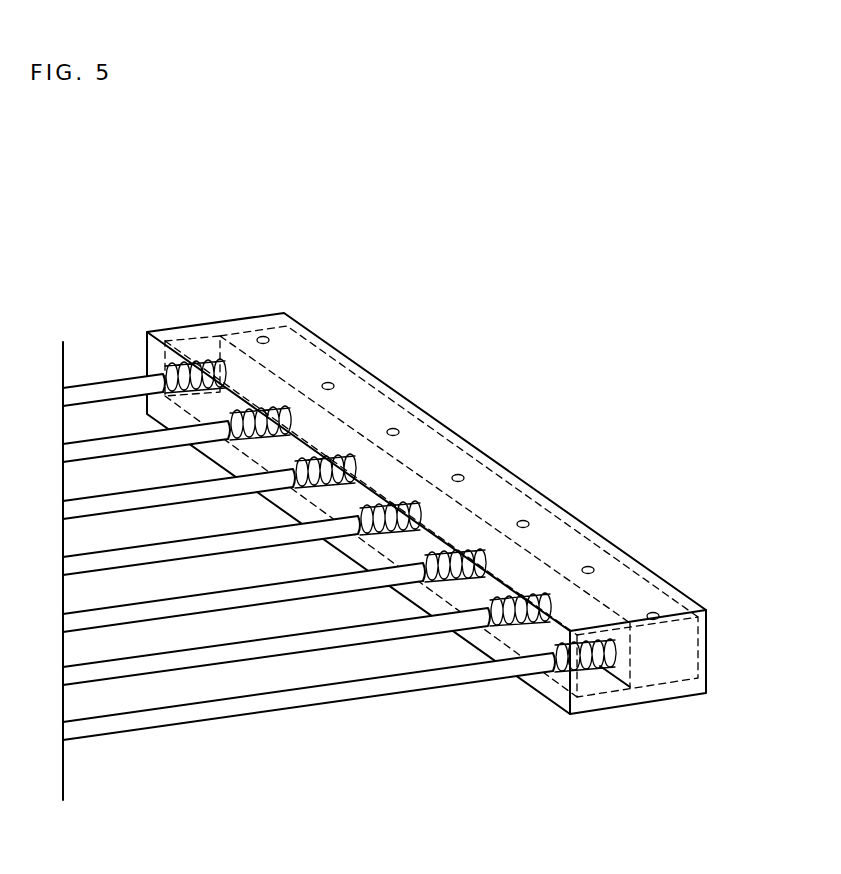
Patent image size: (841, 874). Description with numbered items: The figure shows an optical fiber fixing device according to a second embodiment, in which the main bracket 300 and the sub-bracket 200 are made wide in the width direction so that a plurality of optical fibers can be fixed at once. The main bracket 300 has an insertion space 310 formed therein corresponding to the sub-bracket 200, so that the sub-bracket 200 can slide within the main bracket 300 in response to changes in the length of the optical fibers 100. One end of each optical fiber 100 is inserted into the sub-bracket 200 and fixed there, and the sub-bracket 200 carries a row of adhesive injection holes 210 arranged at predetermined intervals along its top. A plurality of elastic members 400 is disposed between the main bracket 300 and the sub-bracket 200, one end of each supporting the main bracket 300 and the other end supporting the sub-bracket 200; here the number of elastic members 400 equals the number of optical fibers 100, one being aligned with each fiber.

The optical fiber 100 is at (330, 698).
The sub-bracket 200 is at (626, 605).
The adhesive injection hole 210 is at (522, 520).
The main bracket 300 is at (600, 702).
The insertion space 310 is at (211, 408).
The elastic member 400 is at (402, 492).